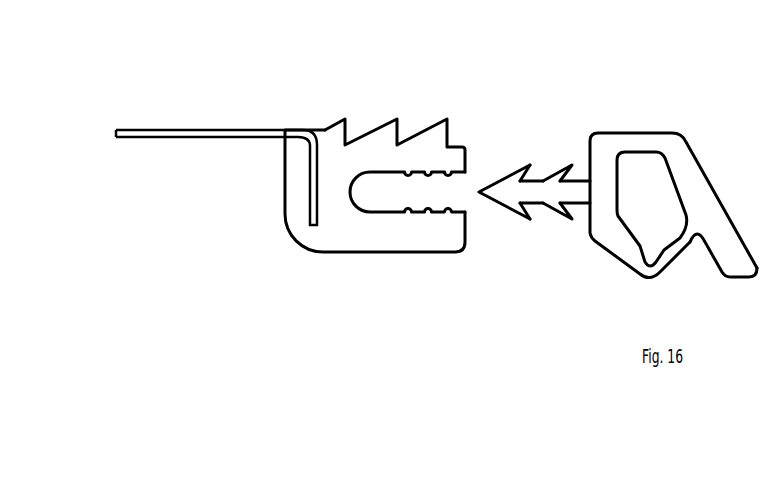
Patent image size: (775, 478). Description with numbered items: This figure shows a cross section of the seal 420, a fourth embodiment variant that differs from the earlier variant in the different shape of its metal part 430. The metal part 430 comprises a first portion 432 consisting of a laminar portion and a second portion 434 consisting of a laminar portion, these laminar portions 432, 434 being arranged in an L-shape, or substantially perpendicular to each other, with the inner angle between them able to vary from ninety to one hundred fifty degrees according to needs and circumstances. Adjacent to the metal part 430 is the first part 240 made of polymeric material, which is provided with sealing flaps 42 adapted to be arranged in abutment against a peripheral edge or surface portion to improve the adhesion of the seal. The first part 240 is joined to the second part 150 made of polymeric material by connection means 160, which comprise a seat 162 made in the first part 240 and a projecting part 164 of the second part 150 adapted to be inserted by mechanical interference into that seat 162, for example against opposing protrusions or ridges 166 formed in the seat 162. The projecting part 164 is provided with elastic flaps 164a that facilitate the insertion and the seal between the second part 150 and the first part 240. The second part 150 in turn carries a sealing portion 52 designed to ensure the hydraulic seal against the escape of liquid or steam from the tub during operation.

The sealing flaps 42 is at (437, 135).
The sealing portion 52 is at (748, 287).
The second part made of polymeric material 150 is at (680, 100).
The connection means 160 is at (528, 289).
The seat 162 is at (448, 190).
The projecting part 164 is at (542, 192).
The elastic flaps 164a is at (553, 208).
The opposing protrusions or ridges 166 is at (436, 170).
The first part made of polymeric material 240 is at (417, 277).
The seal 420 is at (219, 297).
The metal part 430 is at (208, 175).
The first portion 432 is at (312, 178).
The second portion 434 is at (228, 138).